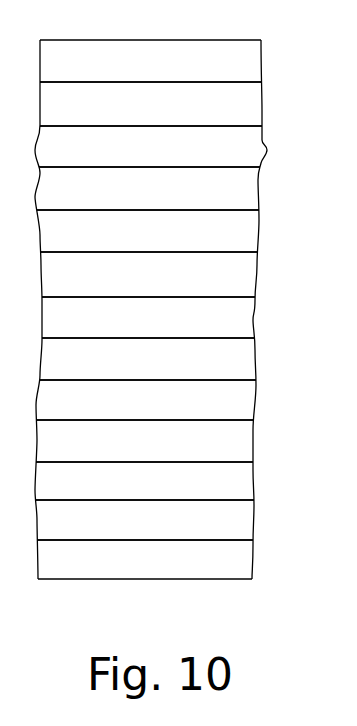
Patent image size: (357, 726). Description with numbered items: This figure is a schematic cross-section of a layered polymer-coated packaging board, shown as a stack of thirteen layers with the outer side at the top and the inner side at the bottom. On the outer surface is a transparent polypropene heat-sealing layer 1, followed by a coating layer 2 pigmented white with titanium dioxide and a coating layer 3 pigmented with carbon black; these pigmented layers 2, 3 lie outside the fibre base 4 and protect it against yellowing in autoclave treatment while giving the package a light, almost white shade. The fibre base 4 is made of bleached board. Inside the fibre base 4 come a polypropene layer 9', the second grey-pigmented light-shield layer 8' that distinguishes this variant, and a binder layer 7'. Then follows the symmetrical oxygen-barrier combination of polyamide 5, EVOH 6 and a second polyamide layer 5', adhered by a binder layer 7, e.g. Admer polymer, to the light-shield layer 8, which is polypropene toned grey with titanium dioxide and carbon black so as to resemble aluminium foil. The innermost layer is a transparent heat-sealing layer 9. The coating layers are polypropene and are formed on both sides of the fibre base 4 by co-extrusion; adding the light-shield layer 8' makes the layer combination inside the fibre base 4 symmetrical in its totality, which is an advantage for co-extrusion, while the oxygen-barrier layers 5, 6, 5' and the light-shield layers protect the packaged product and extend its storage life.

The transparent polypropene heat-sealing layer 1 is at (252, 62).
The coating layer pigmented white 2 is at (252, 105).
The coating layer pigmented with carbon black 3 is at (251, 148).
The fibre base 4 is at (250, 190).
The polypropene layer 9' is at (176, 231).
The second grey-pigmented light-shield layer 8' is at (177, 274).
The binder layer 7' is at (178, 317).
The polyamide layer 5 is at (175, 359).
The EVOH layer 6 is at (244, 401).
The second polyamide layer 5' is at (173, 441).
The binder layer 7 is at (170, 481).
The light-shield layer 8 is at (170, 520).
The transparent heat-sealing layer 9 is at (171, 559).